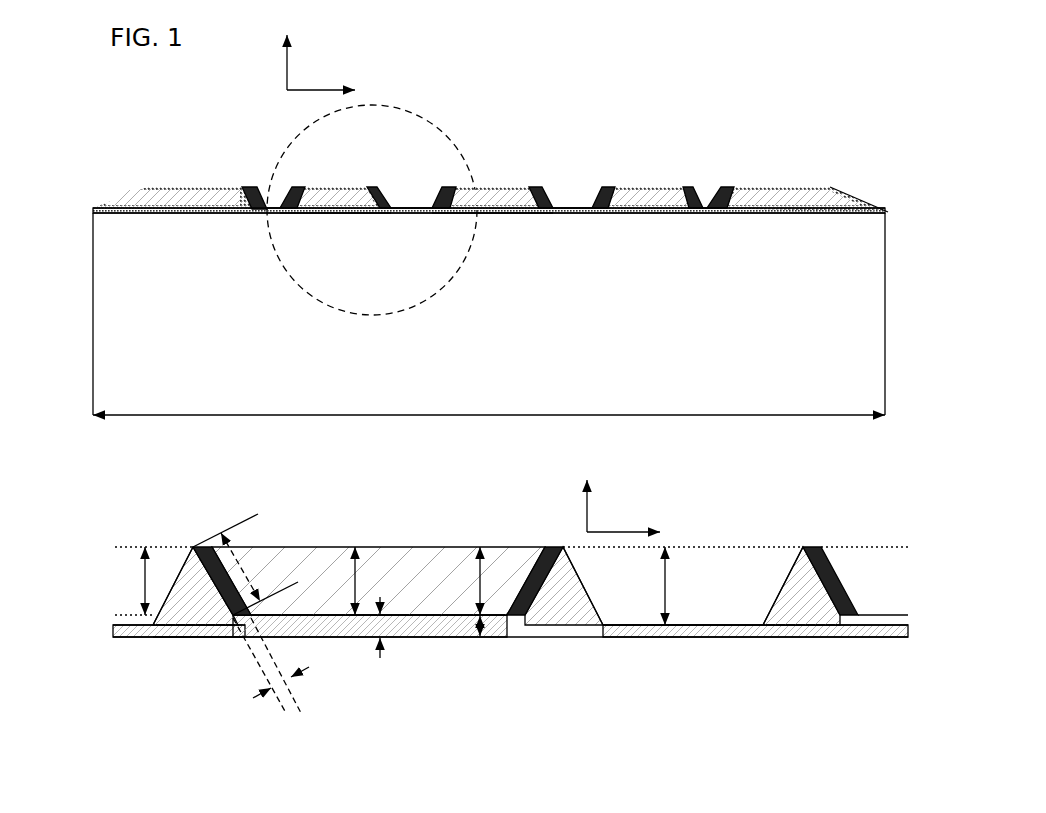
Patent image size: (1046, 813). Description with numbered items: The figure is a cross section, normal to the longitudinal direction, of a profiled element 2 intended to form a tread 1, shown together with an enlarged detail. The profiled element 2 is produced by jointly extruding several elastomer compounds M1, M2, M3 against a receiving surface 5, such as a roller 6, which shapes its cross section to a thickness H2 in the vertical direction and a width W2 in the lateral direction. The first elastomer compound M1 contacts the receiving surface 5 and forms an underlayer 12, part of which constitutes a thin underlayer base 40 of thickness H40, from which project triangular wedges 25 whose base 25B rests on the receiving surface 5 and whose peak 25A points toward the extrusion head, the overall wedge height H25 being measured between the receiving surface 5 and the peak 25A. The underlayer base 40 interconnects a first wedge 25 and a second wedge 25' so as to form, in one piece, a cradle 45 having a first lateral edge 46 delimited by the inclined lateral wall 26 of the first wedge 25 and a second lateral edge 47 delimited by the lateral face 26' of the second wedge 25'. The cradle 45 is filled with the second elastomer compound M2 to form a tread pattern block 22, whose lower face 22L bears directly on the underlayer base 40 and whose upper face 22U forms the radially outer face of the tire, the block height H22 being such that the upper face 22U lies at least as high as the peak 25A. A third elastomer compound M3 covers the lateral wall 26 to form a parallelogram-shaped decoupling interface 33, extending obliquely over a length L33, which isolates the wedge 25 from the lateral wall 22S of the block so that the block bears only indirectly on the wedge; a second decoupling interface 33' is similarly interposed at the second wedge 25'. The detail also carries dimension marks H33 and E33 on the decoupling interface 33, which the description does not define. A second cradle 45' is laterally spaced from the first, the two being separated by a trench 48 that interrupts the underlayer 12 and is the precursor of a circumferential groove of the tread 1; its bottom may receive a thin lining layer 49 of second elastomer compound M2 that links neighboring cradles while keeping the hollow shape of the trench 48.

The tread 1 is at (757, 84).
The profiled element 2 is at (762, 183).
The receiving surface 5 is at (513, 461).
The roller 6 is at (836, 206).
The underlayer 12 is at (500, 498).
The tread pattern block 22 is at (500, 402).
The upper face of the tread pattern block 22U is at (318, 188).
The lower face of the tread pattern block 22L is at (380, 640).
The lateral wall of the tread pattern block 22S is at (236, 566).
The wedge 25 is at (481, 465).
The peak of the wedge 25A is at (192, 544).
The base of the wedge 25B is at (196, 640).
The second wedge 25' is at (590, 586).
The lateral wall of the wedge 26 is at (109, 635).
The lateral face of the second wedge 26' is at (643, 618).
The decoupling interface 33 is at (474, 425).
The second decoupling interface 33' is at (594, 636).
The underlayer base 40 is at (328, 214).
The cradle 45 is at (333, 501).
The second cradle 45' is at (542, 295).
The first lateral edge of the cradle 46 is at (109, 635).
The second lateral edge of the cradle 47 is at (589, 623).
The trench 48 is at (404, 193).
The lining layer 49 is at (386, 208).
The first elastomer compound M1 is at (481, 498).
The second elastomer compound M2 is at (500, 402).
The third elastomer compound M3 is at (474, 425).
The width of the profiled element W2 is at (489, 397).
The thickness of the profiled element H2 is at (483, 550).
The height of the tread pattern block H22 is at (353, 544).
The overall height of the wedge H25 is at (684, 586).
The height of third layer H33 is at (108, 565).
The thickness of the underlayer base H40 is at (430, 647).
The length of the decoupling interface L33 is at (236, 536).
The thickness of third layer E33 is at (281, 682).